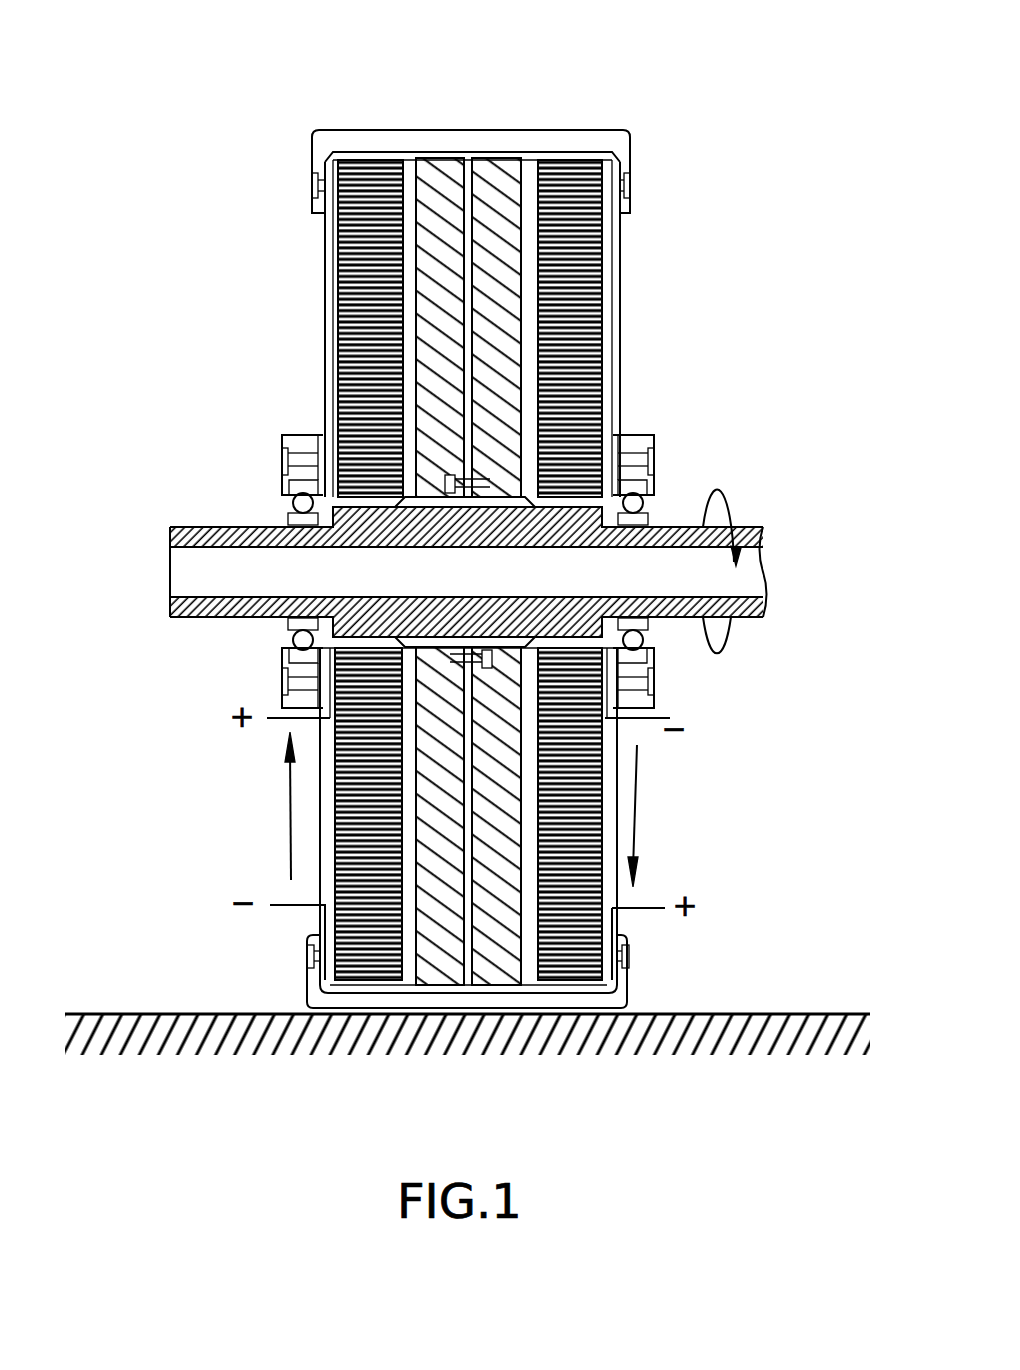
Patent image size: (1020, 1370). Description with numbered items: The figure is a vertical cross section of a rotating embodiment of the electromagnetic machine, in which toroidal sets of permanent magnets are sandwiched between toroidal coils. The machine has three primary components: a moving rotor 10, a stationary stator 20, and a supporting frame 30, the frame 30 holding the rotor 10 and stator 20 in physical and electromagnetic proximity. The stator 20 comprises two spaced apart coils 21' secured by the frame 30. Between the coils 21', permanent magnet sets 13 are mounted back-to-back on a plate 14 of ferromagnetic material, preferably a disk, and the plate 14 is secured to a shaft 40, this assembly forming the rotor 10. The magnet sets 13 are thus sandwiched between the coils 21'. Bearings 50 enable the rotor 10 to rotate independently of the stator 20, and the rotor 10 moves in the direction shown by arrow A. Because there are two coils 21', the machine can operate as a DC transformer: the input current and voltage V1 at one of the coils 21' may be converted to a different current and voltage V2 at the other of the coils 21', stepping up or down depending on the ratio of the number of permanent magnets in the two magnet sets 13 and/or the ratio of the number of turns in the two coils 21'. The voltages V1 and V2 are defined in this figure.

The rotor 10 is at (412, 987).
The magnet set 13 is at (502, 173).
The plate 14 is at (467, 987).
The stator 20 is at (652, 958).
The coil 21' is at (494, 570).
The frame 30 is at (622, 290).
The shaft 40 is at (255, 537).
The bearing 50 is at (634, 500).
The arrow A is at (733, 500).
The input voltage V1 is at (269, 806).
The output voltage V2 is at (659, 816).